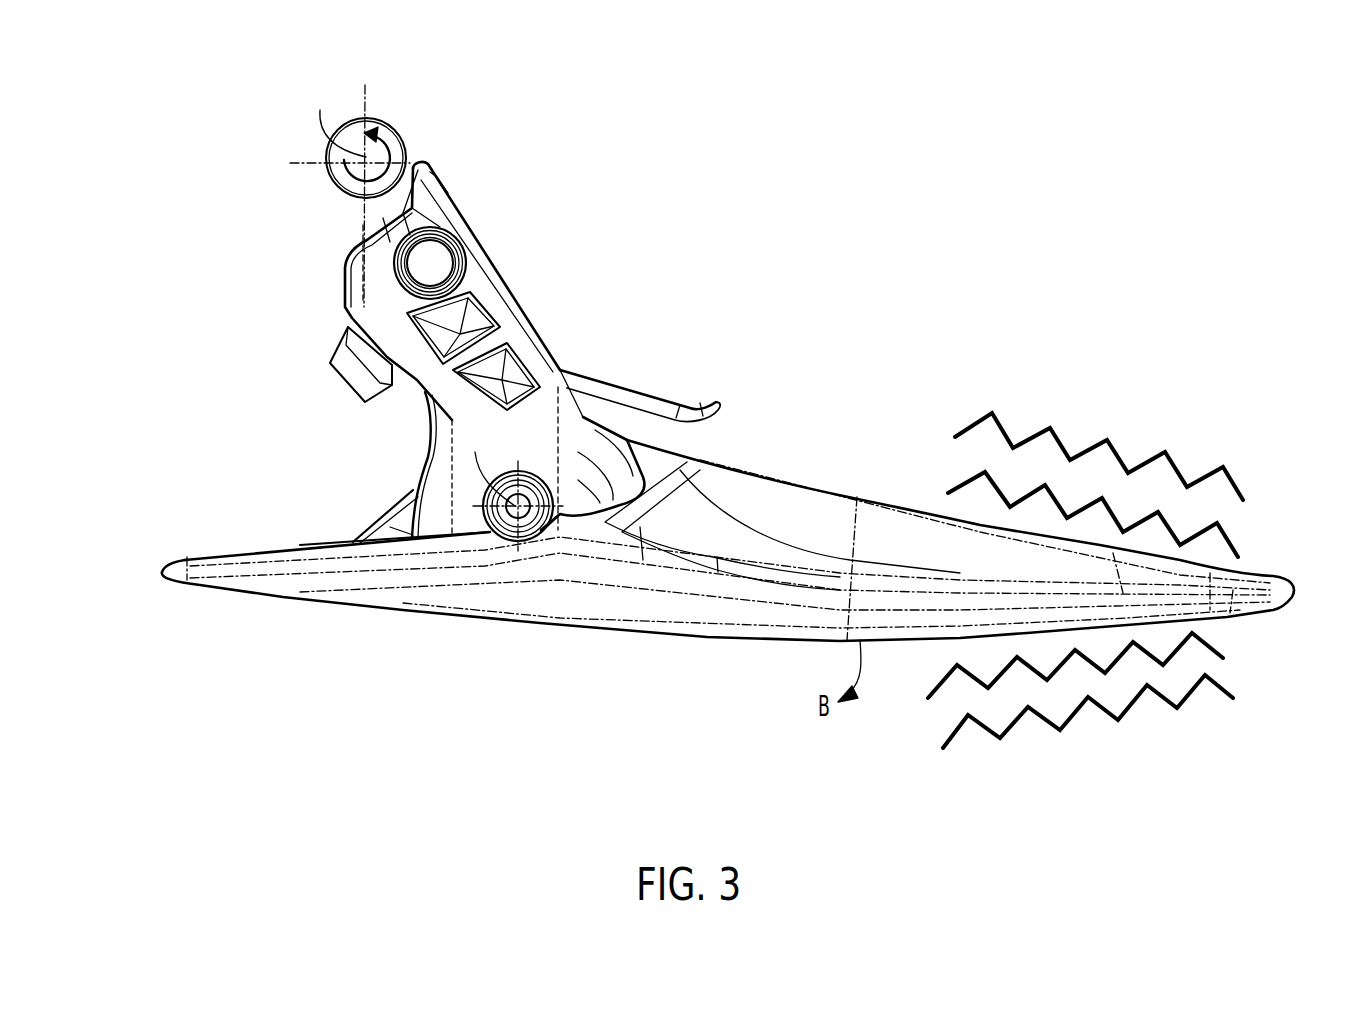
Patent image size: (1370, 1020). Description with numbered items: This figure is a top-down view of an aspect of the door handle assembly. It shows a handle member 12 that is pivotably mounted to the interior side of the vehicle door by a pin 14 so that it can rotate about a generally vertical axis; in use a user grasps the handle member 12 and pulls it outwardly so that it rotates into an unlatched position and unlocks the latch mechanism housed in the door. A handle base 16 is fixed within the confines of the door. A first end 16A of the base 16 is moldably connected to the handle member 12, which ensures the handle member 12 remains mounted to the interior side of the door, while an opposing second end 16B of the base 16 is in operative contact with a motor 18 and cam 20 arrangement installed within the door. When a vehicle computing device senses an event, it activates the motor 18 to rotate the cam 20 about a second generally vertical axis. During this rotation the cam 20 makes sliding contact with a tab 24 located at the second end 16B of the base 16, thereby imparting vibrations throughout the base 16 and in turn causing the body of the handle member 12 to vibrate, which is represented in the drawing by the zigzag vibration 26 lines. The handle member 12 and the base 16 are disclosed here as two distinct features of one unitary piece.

The handle member 12 is at (1300, 585).
The pin 14 is at (500, 533).
The handle base 16 is at (553, 348).
The first end 16A is at (528, 540).
The second end 16B is at (462, 215).
The motor 18 is at (396, 126).
The cam 20 is at (395, 195).
The tab 24 is at (425, 165).
The vibration 26 is at (1180, 442).